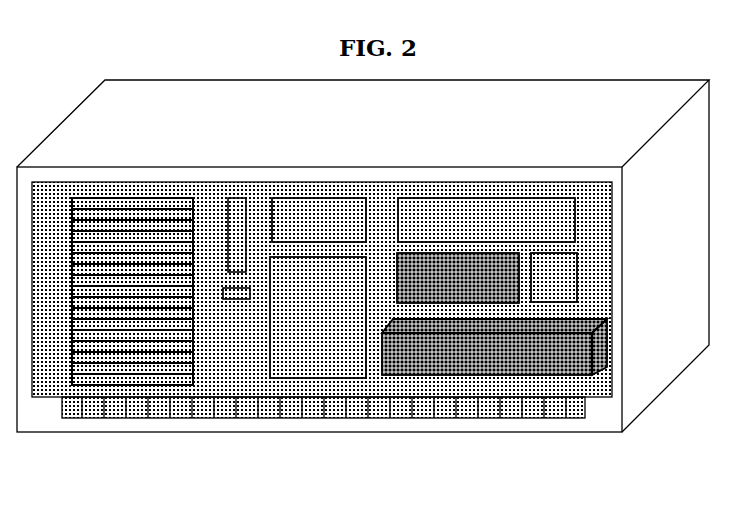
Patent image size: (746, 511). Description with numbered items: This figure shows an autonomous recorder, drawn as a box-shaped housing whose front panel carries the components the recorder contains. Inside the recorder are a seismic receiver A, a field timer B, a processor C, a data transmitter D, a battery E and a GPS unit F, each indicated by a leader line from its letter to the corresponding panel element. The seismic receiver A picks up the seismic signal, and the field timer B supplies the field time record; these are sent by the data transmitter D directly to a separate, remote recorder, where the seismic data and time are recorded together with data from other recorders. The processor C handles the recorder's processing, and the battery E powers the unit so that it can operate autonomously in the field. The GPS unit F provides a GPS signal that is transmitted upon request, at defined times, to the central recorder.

The seismic receiver A is at (261, 318).
The field timer B is at (402, 223).
The processor C is at (314, 251).
The data transmitter D is at (390, 283).
The battery E is at (484, 385).
The GPS unit F is at (523, 286).